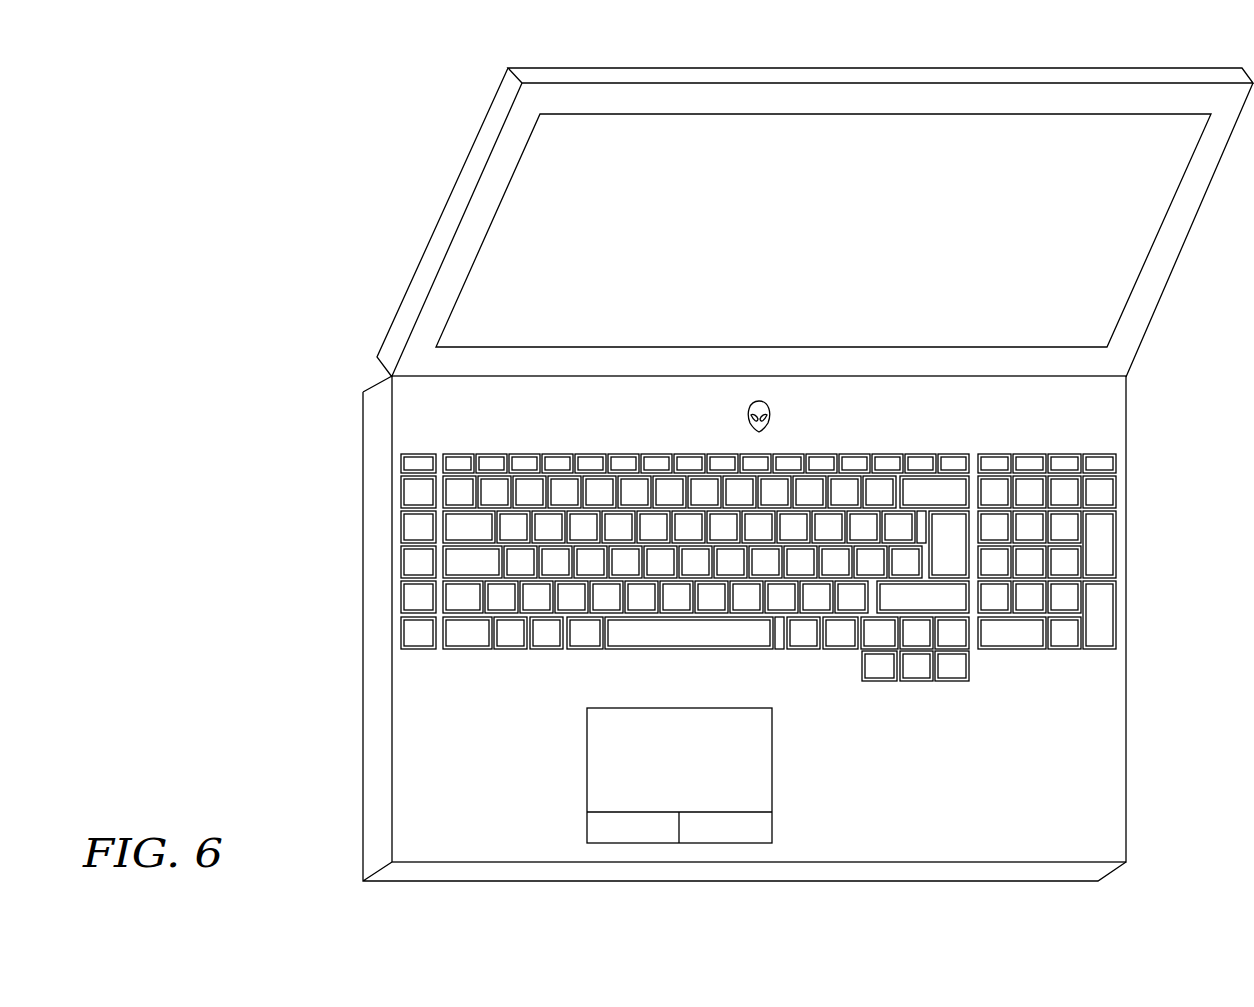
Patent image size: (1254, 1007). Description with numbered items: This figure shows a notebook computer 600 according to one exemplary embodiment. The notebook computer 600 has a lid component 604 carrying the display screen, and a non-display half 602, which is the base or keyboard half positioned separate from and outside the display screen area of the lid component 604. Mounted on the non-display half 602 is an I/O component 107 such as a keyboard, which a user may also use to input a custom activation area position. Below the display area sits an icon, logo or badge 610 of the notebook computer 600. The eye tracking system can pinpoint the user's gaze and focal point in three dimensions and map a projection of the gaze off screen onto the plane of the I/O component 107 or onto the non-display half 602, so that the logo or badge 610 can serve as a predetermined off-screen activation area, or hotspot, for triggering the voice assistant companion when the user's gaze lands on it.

The notebook computer 600 is at (330, 52).
The non-display half 602 is at (362, 552).
The lid component 604 is at (435, 221).
The I/O component 107 is at (488, 452).
The icon, logo or badge 610 is at (760, 400).